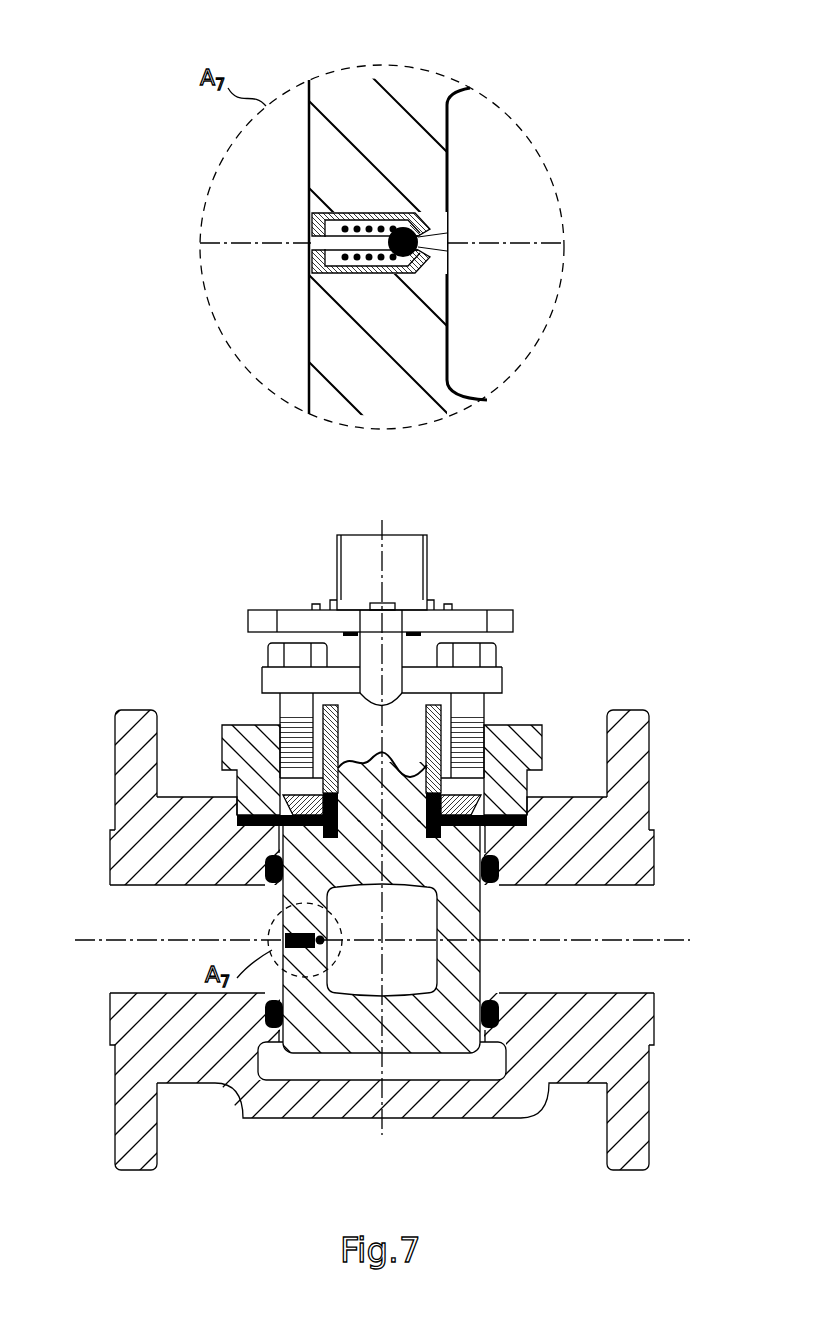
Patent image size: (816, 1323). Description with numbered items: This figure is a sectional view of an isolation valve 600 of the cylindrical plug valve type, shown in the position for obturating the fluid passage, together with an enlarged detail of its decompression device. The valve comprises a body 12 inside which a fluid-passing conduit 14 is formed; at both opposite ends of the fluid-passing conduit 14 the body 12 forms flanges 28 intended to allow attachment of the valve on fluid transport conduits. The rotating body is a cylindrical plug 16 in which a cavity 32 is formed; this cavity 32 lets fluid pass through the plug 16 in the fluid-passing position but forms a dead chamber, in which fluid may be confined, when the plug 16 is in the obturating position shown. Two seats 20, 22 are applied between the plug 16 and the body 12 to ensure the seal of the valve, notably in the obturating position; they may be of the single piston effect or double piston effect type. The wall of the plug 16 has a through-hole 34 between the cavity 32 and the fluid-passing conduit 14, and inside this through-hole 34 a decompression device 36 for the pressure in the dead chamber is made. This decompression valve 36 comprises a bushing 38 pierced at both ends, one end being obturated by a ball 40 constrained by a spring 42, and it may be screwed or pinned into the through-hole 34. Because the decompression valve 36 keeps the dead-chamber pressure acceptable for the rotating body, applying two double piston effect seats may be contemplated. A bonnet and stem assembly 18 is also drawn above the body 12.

The isolation valve 600 is at (183, 594).
The body 12 is at (432, 1105).
The fluid-passing conduit 14 is at (230, 312).
The plug 16 is at (355, 92).
The bonnet 18 is at (407, 745).
The seat 20 is at (275, 886).
The seat 22 is at (490, 885).
The flanges 28 is at (122, 726).
The cavity 32 is at (527, 160).
The through-hole 34 is at (435, 250).
The decompression device 36 is at (380, 290).
The bushing 38 is at (335, 272).
The ball 40 is at (418, 238).
The spring 42 is at (372, 213).